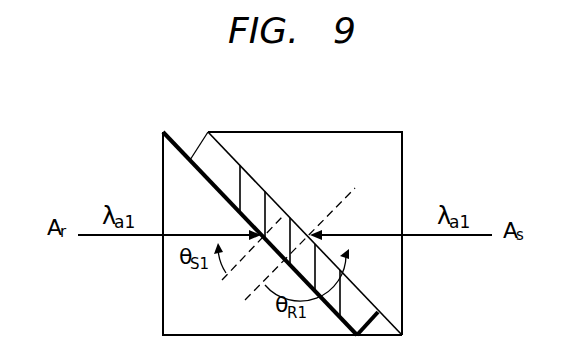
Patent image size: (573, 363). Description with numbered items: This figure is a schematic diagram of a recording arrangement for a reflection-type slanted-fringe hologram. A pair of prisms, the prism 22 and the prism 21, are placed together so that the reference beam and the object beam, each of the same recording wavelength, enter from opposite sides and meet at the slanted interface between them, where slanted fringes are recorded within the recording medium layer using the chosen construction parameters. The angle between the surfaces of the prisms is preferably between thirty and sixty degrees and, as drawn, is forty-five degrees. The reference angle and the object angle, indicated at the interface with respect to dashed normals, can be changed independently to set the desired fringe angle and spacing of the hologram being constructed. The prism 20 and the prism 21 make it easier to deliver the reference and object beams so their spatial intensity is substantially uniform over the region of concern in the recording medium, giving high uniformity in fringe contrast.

The prism 20 is at (163, 183).
The prism 21 is at (334, 132).
The prism 22 is at (200, 147).